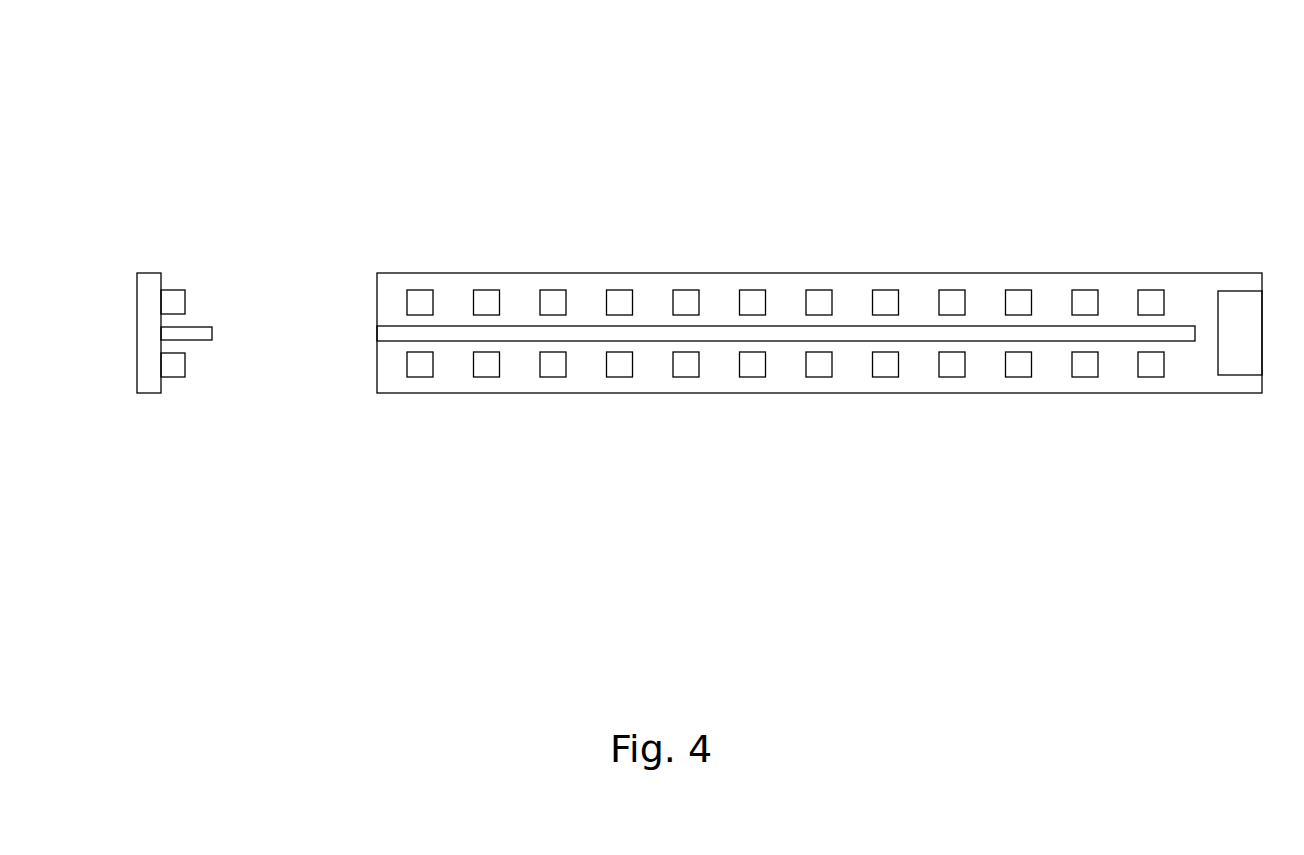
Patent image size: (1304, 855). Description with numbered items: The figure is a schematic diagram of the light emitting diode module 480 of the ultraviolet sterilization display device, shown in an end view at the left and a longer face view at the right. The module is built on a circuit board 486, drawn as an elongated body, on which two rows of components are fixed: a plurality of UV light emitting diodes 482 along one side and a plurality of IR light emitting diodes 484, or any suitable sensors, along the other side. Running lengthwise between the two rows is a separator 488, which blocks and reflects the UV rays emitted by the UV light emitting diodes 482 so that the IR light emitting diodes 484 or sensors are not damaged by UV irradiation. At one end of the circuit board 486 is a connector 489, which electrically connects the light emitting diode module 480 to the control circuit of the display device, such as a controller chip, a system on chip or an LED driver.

The light emitting diode module 480 is at (196, 102).
The UV light emitting diodes 482 is at (178, 364).
The IR light emitting diodes 484 is at (178, 302).
The circuit board 486 is at (145, 333).
The separator 488 is at (204, 333).
The connector 489 is at (1237, 300).